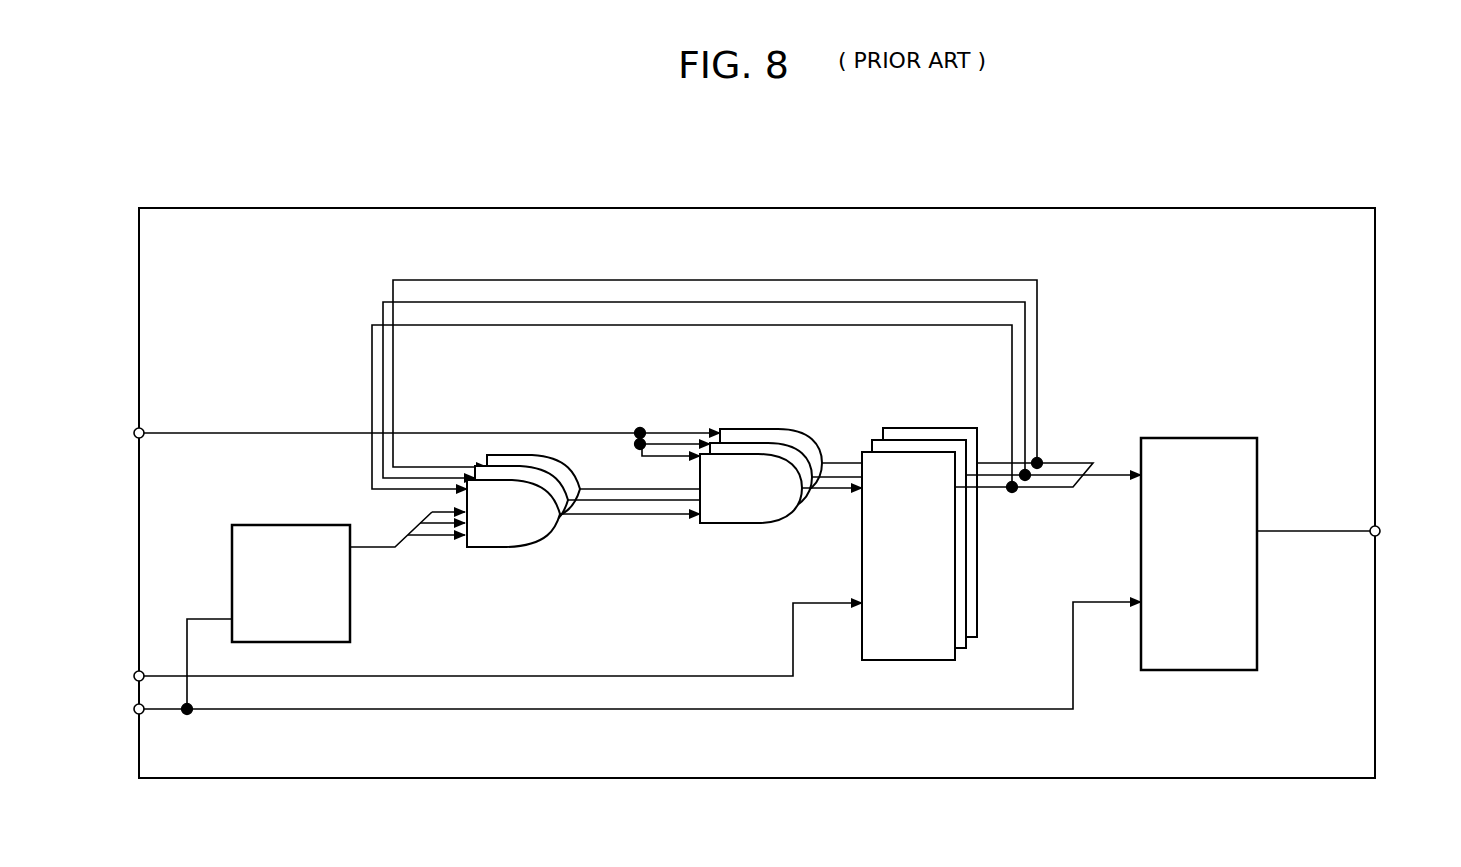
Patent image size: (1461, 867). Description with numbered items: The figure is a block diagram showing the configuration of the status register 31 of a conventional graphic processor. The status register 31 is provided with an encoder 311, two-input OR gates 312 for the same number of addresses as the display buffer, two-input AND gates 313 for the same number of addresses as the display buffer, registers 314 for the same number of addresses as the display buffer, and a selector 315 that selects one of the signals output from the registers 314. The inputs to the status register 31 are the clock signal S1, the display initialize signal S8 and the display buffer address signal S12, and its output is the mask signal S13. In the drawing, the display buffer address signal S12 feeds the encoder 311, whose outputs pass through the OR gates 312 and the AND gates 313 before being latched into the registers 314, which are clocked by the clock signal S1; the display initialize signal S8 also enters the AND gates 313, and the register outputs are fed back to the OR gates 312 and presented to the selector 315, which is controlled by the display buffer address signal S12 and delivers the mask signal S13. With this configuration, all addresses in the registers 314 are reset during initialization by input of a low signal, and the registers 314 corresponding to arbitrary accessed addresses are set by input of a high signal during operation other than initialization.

The status register 31 is at (886, 208).
The encoder 311 is at (288, 525).
The two-input OR gates 312 is at (515, 552).
The two-input AND gates 313 is at (760, 430).
The registers 314 is at (940, 428).
The selector 315 is at (1200, 438).
The display initialize signal S8 is at (360, 434).
The clock signal S1 is at (471, 646).
The display buffer address signal S12 is at (772, 745).
The mask signal S13 is at (1341, 532).